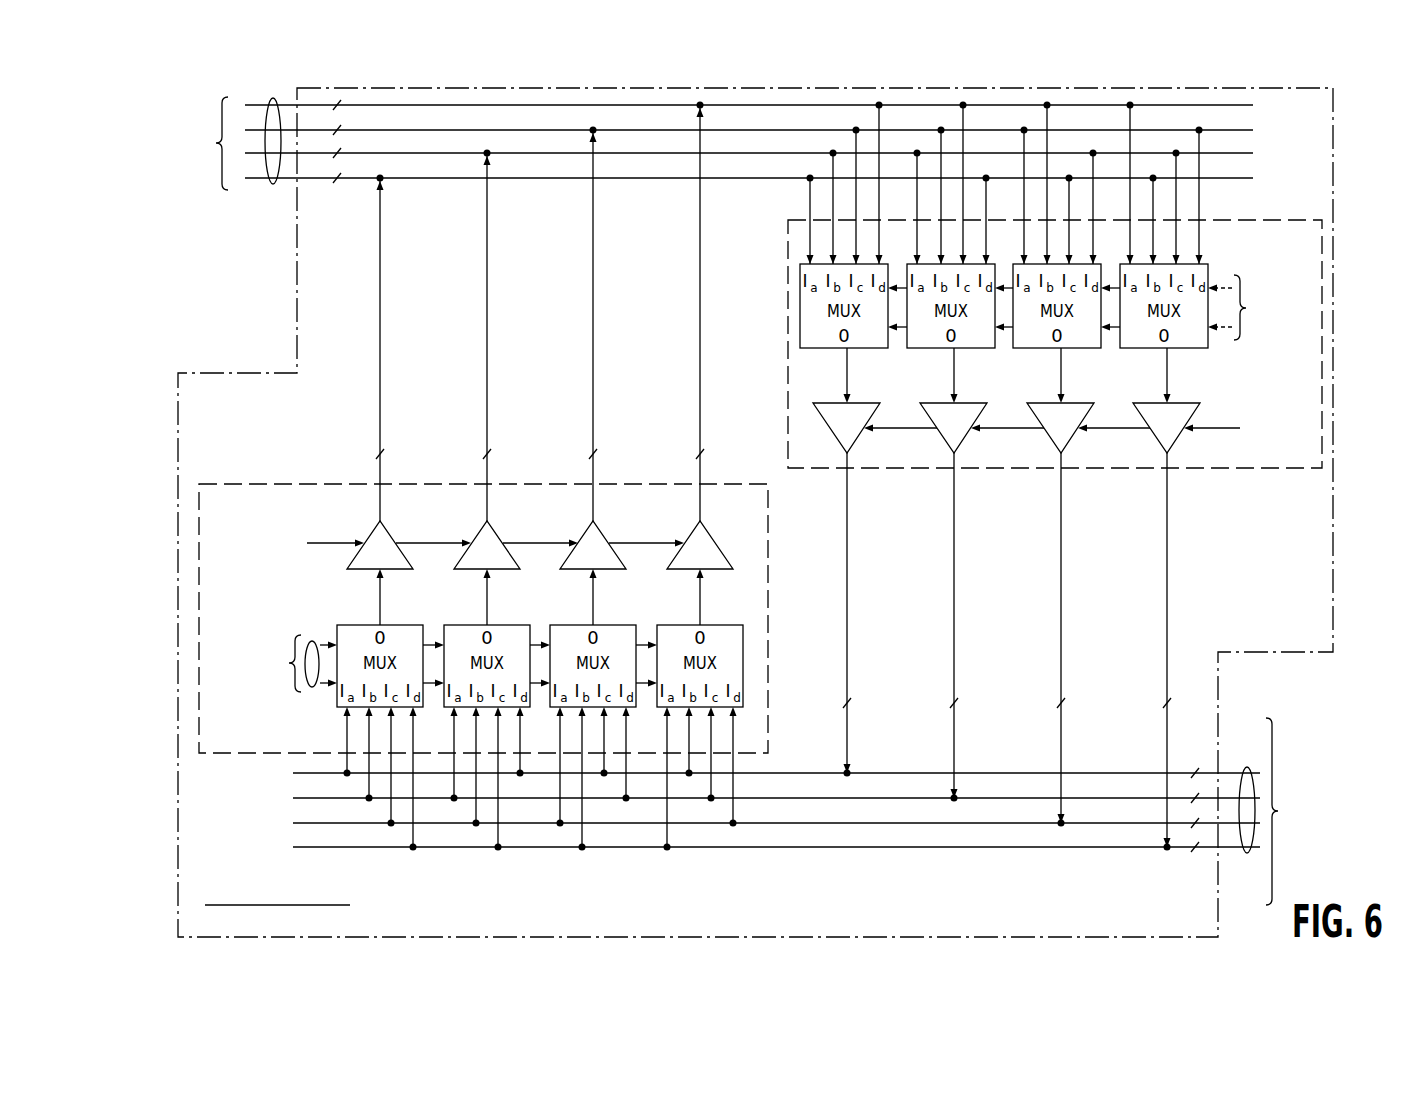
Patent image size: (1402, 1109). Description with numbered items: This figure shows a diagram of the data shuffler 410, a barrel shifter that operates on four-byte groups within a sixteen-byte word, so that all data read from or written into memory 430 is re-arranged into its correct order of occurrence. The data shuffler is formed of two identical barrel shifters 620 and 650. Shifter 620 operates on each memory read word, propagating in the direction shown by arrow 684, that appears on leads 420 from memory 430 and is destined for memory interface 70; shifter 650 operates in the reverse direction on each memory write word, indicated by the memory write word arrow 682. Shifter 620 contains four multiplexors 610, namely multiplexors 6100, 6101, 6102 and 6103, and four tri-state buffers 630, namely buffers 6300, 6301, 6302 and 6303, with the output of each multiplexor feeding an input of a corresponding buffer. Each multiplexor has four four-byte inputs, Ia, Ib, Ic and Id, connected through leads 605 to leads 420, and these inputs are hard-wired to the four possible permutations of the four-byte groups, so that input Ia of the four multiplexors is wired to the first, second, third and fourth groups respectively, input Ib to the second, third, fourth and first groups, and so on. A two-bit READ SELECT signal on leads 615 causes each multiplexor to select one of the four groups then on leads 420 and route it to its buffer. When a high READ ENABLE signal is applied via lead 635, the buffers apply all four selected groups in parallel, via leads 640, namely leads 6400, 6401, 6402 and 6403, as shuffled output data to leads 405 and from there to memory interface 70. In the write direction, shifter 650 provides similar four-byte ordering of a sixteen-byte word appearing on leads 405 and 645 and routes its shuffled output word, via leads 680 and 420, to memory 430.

The memory interface 70 is at (163, 177).
The leads 405 is at (273, 184).
The data shuffler 410 is at (295, 345).
The leads 645 is at (1226, 193).
The leads 640 is at (483, 312).
The lead 6400 is at (378, 390).
The lead 6401 is at (485, 390).
The lead 6402 is at (591, 390).
The lead 6403 is at (661, 312).
The lead 635 is at (332, 542).
The tri-state buffers 630 is at (511, 545).
The tri-state buffer 6300 is at (386, 543).
The tri-state buffer 6301 is at (493, 543).
The tri-state buffer 6302 is at (599, 543).
The tri-state buffer 6303 is at (716, 532).
The leads 615 is at (310, 645).
The multiplexors 610 is at (498, 643).
The multiplexor 6100 is at (388, 625).
The multiplexor 6101 is at (495, 625).
The multiplexor 6102 is at (601, 625).
The multiplexor 6103 is at (708, 625).
The leads 605 is at (318, 728).
The barrel shifter 620 is at (237, 753).
The barrel shifter 650 is at (823, 470).
The leads 680 is at (1204, 511).
The memory write word 682 is at (1178, 642).
The arrow 684 is at (648, 864).
The leads 420 is at (1247, 853).
The memory 430 is at (1316, 811).